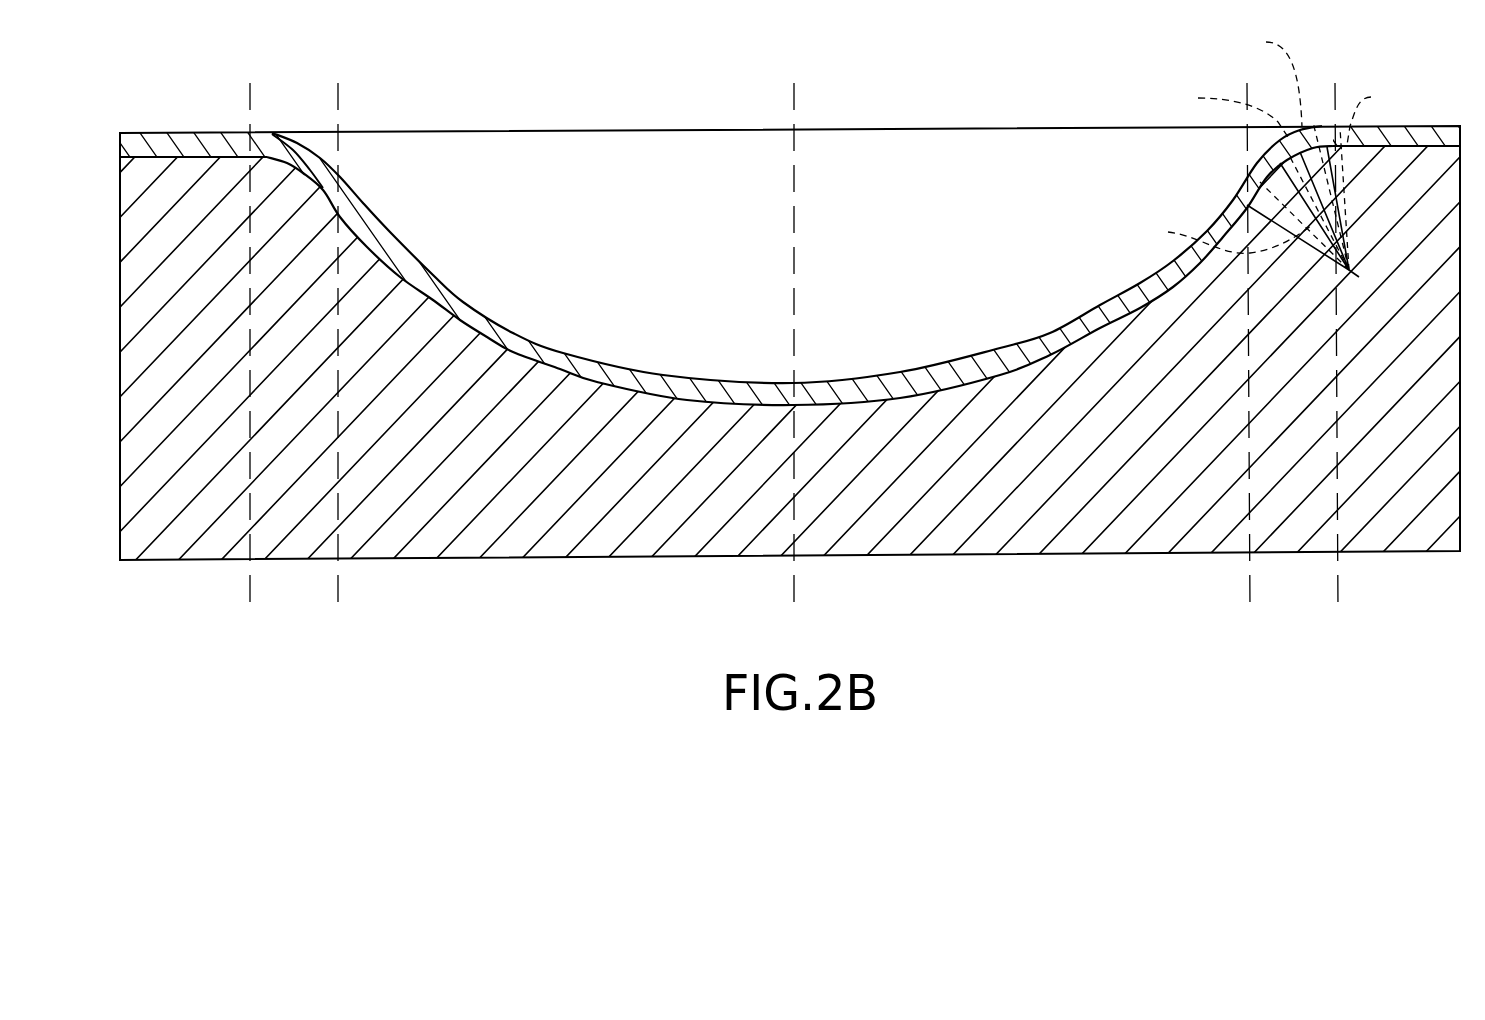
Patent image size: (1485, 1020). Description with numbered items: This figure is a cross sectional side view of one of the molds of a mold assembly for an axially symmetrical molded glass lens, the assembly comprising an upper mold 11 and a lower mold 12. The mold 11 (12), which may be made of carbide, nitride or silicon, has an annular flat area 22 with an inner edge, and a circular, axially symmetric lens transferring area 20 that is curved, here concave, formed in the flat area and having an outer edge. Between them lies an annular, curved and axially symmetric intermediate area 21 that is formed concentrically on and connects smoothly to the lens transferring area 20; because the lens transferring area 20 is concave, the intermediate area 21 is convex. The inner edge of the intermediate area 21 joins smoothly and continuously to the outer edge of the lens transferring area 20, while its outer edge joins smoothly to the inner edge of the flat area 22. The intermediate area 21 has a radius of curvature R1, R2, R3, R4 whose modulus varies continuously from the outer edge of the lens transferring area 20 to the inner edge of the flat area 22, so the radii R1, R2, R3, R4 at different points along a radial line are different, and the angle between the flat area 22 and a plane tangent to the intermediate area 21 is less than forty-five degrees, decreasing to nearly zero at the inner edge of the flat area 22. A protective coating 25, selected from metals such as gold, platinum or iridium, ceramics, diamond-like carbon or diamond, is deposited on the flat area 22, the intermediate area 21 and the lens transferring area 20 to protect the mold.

The upper mold 11 is at (742, 386).
The lower mold 12 is at (120, 560).
The lens transferring area 20 is at (883, 393).
The intermediate area 21 is at (1248, 173).
The flat area 22 is at (1410, 142).
The protective coating 25 is at (186, 143).
The radius of curvature R1 is at (1222, 234).
The radius of curvature R2 is at (1226, 112).
The radius of curvature R3 is at (1378, 113).
The radius of curvature R4 is at (1265, 78).